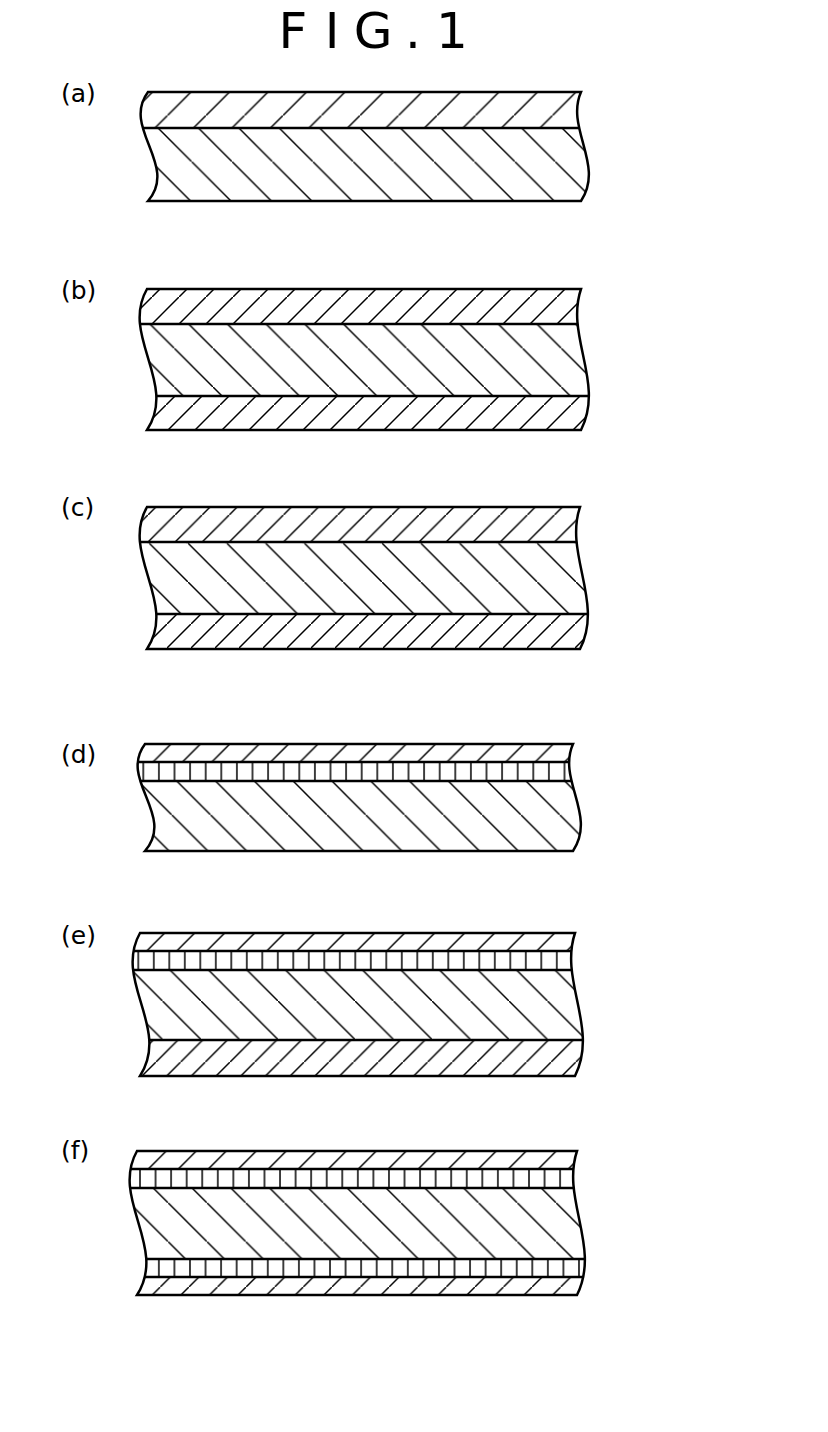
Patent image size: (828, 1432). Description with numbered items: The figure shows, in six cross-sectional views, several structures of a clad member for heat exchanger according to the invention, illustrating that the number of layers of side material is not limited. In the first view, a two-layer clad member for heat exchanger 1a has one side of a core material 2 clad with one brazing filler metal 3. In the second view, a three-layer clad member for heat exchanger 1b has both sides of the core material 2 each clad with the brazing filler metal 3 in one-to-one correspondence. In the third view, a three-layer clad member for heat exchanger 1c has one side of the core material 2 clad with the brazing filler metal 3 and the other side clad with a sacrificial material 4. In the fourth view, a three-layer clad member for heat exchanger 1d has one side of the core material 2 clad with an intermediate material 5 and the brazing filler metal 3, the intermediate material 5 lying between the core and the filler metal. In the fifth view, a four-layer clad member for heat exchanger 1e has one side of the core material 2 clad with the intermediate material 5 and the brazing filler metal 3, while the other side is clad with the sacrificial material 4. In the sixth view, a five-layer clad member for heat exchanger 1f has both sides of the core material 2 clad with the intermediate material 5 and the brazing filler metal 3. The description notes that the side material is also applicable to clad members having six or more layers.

The two-layer clad member for heat exchanger 1a is at (661, 102).
The three-layer clad member for heat exchanger 1b is at (661, 285).
The three-layer clad member for heat exchanger 1c is at (661, 508).
The three-layer clad member for heat exchanger 1d is at (661, 725).
The four-layer clad member for heat exchanger 1e is at (661, 930).
The five-layer clad member for heat exchanger 1f is at (661, 1152).
The core material 2 is at (573, 160).
The brazing filler metal 3 is at (568, 118).
The sacrificial material 4 is at (573, 632).
The intermediate material 5 is at (566, 771).